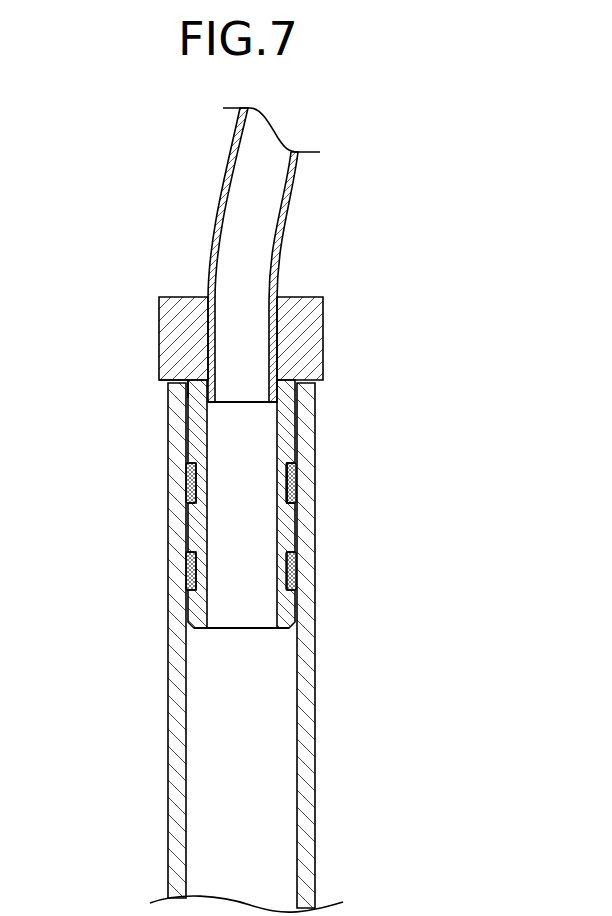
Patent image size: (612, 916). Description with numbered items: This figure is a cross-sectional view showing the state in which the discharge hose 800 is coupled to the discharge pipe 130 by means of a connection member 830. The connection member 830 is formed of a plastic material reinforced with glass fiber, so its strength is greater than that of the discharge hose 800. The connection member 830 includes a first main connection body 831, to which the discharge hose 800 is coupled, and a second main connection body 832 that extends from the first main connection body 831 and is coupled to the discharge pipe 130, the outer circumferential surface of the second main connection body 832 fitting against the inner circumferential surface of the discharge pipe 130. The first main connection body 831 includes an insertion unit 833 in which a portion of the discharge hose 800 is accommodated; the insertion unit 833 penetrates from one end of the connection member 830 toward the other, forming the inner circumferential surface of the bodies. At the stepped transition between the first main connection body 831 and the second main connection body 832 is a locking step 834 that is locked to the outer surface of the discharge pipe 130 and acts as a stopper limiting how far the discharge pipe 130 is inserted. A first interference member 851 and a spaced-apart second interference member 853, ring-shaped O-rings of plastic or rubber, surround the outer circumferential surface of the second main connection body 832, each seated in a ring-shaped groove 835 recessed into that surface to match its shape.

The discharge hose 800 is at (222, 190).
The connection member 830 is at (233, 429).
The first main connection body 831 is at (172, 331).
The second main connection body 832 is at (287, 522).
The insertion unit 833 is at (285, 341).
The locking step 834 is at (175, 376).
The groove 835 is at (293, 460).
The first interference member 851 is at (192, 483).
The second interference member 853 is at (192, 575).
The discharge pipe 130 is at (307, 731).